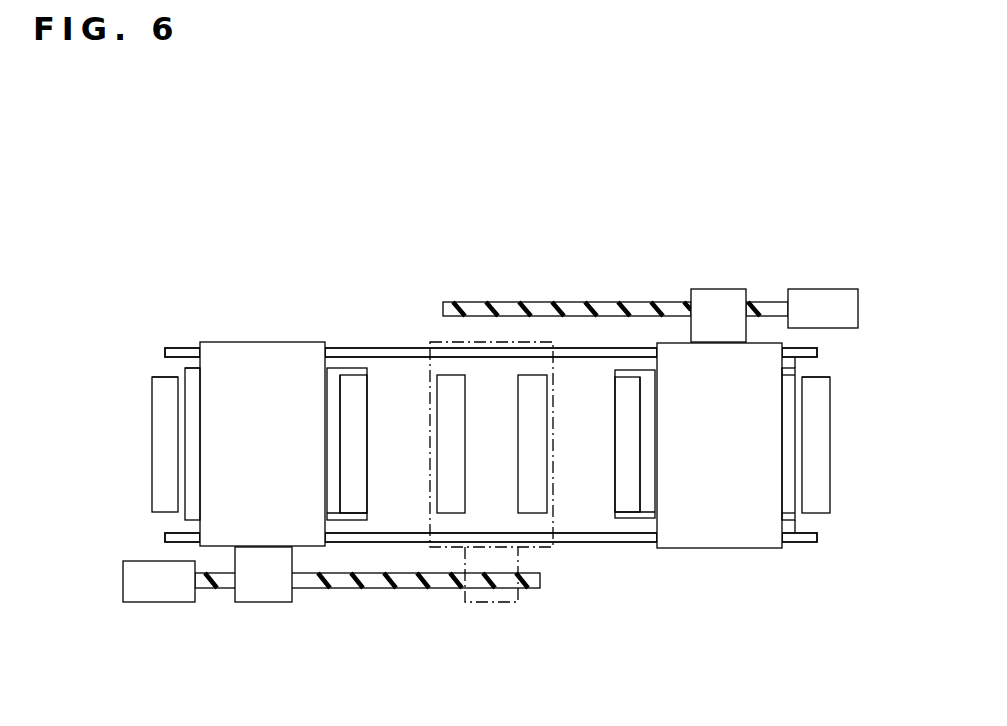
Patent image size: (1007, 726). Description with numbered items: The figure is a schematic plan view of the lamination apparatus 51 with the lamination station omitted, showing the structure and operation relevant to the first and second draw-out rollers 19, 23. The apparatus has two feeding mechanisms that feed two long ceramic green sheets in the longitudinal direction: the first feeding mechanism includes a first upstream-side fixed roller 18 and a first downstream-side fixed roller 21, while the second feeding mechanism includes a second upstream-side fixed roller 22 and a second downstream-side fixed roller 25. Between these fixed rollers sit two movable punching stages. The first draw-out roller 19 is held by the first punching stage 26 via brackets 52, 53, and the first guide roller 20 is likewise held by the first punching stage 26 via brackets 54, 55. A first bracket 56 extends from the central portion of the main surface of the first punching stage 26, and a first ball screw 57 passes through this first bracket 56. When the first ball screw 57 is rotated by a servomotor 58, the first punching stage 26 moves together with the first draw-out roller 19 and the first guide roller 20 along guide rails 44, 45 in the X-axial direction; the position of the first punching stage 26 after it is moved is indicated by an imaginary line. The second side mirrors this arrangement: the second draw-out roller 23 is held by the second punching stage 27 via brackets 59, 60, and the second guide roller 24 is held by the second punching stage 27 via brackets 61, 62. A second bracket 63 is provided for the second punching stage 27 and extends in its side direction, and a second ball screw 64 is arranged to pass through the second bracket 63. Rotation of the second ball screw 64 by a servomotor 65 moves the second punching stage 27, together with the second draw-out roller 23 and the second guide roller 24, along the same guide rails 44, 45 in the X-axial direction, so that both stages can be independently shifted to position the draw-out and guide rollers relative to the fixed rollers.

The lamination apparatus 51 is at (192, 168).
The first upstream-side fixed roller 18 is at (163, 443).
The first draw-out roller 19 is at (352, 400).
The first guide roller 20 is at (190, 395).
The first downstream-side fixed roller 21 is at (447, 388).
The second upstream-side fixed roller 22 is at (822, 407).
The second draw-out roller 23 is at (620, 393).
The second guide roller 24 is at (790, 457).
The second downstream-side fixed roller 25 is at (532, 498).
The first punching stage 26 is at (260, 350).
The second punching stage 27 is at (727, 538).
The guide rail 44 is at (818, 355).
The guide rail 45 is at (819, 538).
The bracket 52 is at (348, 368).
The bracket 53 is at (353, 520).
The bracket 54 is at (185, 368).
The bracket 55 is at (195, 515).
The first bracket 56 is at (264, 592).
The first ball screw 57 is at (408, 590).
The servomotor 58 is at (152, 592).
The bracket 59 is at (645, 368).
The bracket 60 is at (632, 520).
The bracket 61 is at (788, 363).
The bracket 62 is at (795, 542).
The second bracket 63 is at (718, 297).
The second ball screw 64 is at (532, 302).
The servomotor 65 is at (845, 295).